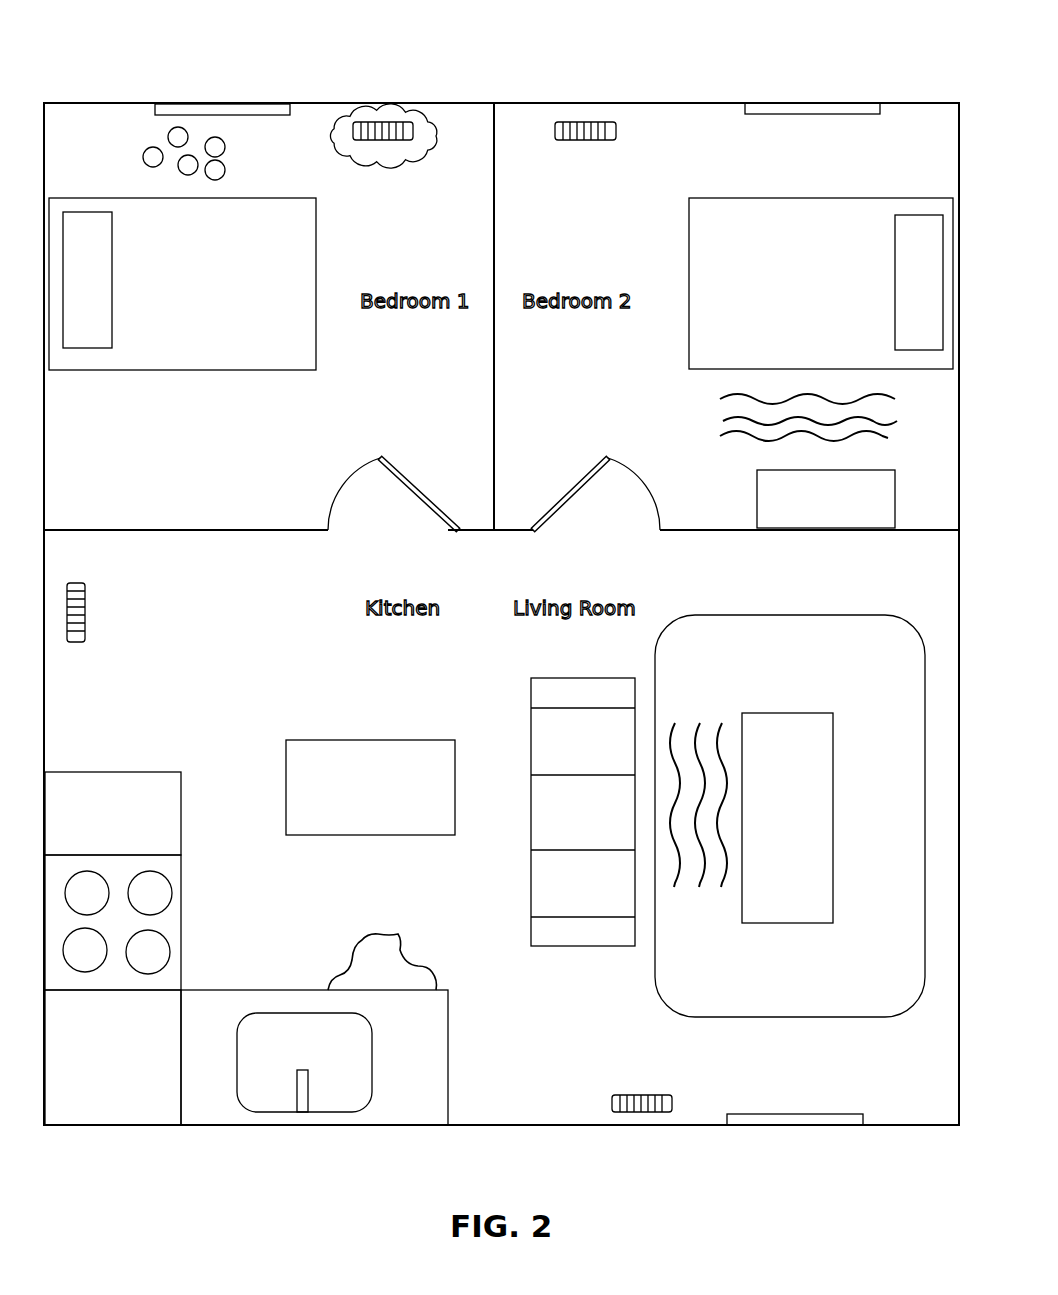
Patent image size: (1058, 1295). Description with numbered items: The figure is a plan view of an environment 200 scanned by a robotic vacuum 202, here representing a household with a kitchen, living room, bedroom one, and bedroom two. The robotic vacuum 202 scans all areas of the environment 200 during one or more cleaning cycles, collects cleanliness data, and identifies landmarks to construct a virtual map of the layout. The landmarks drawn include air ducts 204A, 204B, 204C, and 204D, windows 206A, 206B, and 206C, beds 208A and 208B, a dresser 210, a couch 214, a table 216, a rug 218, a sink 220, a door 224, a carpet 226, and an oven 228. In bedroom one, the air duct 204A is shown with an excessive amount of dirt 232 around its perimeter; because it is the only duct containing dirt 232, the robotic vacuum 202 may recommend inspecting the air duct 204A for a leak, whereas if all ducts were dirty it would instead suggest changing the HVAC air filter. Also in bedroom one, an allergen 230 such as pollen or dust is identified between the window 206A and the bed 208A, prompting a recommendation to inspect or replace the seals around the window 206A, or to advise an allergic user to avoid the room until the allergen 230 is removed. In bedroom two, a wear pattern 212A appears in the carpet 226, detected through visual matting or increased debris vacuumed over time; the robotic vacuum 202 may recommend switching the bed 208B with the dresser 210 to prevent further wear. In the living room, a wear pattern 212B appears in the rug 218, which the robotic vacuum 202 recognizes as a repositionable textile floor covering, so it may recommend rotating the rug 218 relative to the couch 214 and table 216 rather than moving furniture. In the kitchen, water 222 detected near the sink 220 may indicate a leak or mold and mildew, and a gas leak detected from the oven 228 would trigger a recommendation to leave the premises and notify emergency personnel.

The environment 200 is at (437, 80).
The robotic vacuum 202 is at (370, 787).
The air duct 204A is at (380, 141).
The air duct 204B is at (592, 141).
The air duct 204C is at (74, 643).
The air duct 204D is at (645, 1094).
The window 206A is at (205, 104).
The window 206B is at (807, 103).
The window 206C is at (843, 1113).
The bed 208A is at (129, 350).
The bed 208B is at (825, 222).
The dresser 210 is at (882, 503).
The wear pattern 212A is at (708, 398).
The wear pattern 212B is at (700, 709).
The couch 214 is at (596, 931).
The table 216 is at (785, 910).
The rug 218 is at (885, 643).
The sink 220 is at (267, 1022).
The water 222 is at (393, 947).
The door 224 is at (437, 505).
The carpet 226 is at (561, 405).
The oven 228 is at (170, 923).
The allergen 230 is at (136, 154).
The dirt 232 is at (418, 162).